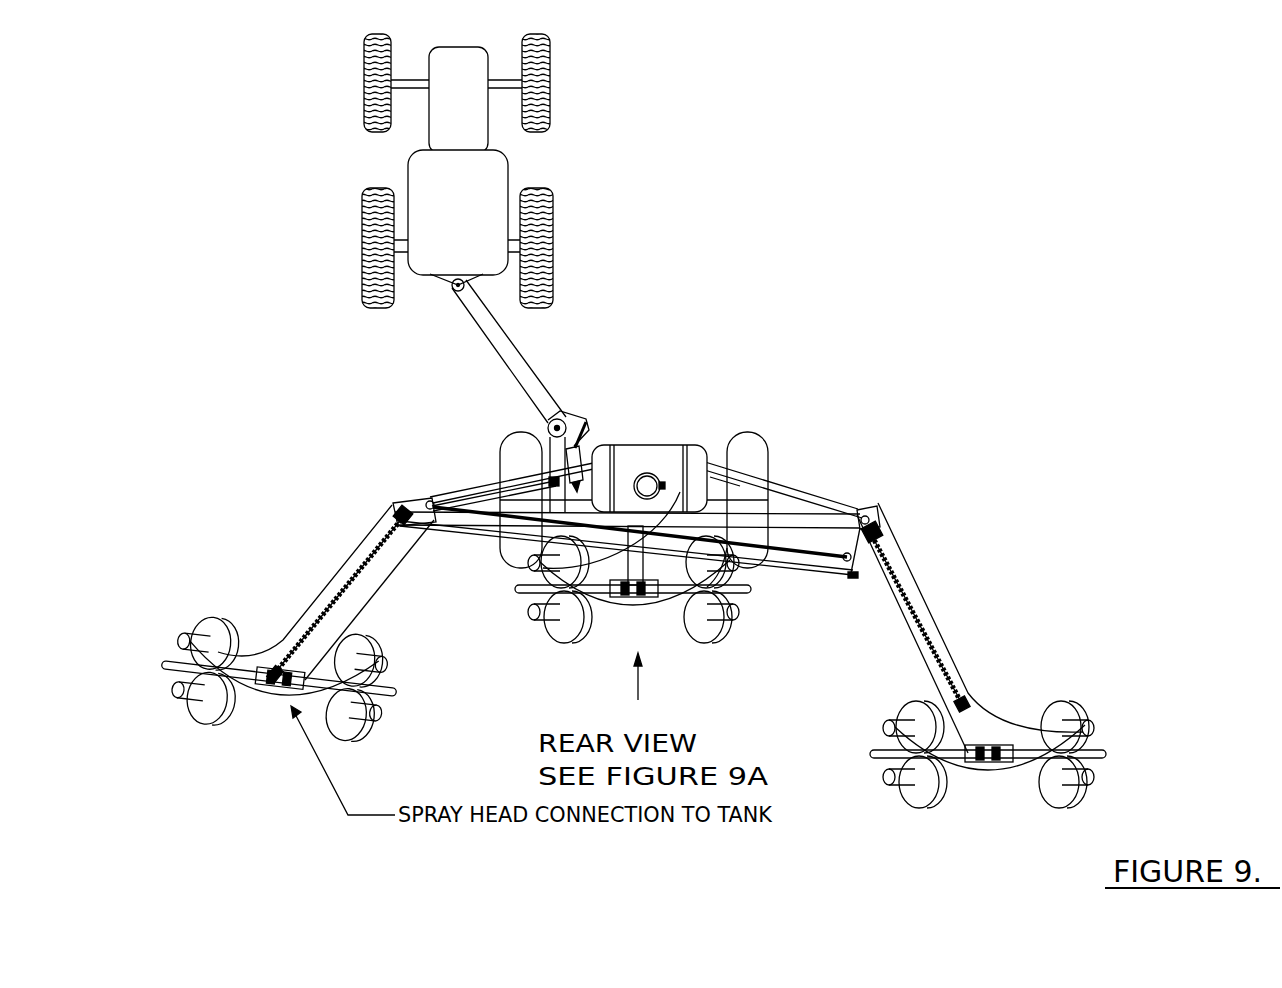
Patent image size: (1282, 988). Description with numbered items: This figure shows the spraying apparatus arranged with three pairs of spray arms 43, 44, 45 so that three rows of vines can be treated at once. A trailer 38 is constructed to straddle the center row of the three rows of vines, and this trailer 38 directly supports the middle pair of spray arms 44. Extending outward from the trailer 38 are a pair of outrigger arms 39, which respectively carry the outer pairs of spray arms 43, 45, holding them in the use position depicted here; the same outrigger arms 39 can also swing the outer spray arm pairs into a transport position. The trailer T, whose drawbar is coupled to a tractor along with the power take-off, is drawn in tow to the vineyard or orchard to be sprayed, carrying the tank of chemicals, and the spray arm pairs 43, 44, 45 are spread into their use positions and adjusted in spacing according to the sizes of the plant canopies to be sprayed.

The trailer T is at (657, 445).
The trailer 38 is at (747, 462).
The outrigger arms 39 is at (335, 593).
The spray arms 43 is at (247, 693).
The spray arms 44 is at (595, 599).
The spray arms 45 is at (955, 767).